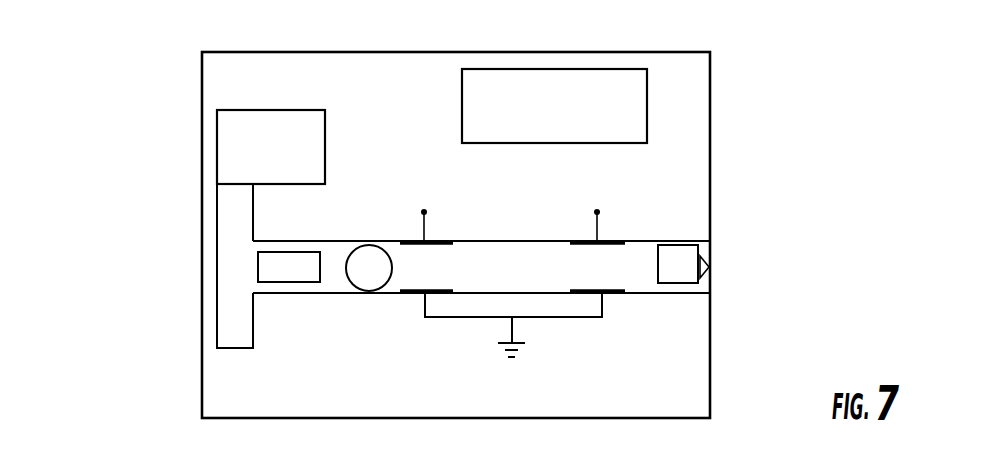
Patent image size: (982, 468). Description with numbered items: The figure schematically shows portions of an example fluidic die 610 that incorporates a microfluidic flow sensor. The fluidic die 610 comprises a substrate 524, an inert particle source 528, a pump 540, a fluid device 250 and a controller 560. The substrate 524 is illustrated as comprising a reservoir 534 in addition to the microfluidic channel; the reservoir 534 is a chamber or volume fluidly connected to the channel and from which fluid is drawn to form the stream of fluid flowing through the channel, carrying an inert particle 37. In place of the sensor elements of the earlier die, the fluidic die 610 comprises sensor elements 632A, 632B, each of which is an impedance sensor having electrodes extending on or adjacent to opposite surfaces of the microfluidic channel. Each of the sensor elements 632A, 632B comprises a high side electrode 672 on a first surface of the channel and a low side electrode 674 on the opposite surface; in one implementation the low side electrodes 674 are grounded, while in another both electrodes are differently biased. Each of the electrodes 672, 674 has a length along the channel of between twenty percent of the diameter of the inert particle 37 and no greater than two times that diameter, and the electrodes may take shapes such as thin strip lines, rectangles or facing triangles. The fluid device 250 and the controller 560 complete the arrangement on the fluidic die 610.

The fluidic die 610 is at (86, 149).
The substrate 524 is at (710, 85).
The controller 560 is at (507, 70).
The inert particle source 528 is at (243, 110).
The reservoir 534 is at (217, 249).
The pump 540 is at (305, 283).
The inert particle 37 is at (369, 290).
The high side electrode 672 is at (413, 241).
The low side electrode 674 is at (413, 295).
The sensor element 632A is at (413, 192).
The sensor element 632B is at (635, 213).
The fluid device 250 is at (680, 245).